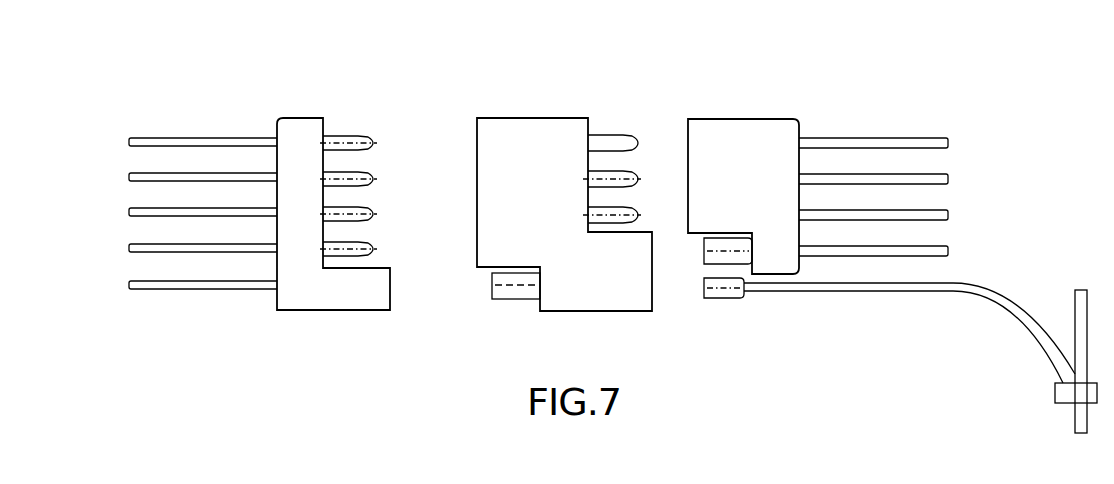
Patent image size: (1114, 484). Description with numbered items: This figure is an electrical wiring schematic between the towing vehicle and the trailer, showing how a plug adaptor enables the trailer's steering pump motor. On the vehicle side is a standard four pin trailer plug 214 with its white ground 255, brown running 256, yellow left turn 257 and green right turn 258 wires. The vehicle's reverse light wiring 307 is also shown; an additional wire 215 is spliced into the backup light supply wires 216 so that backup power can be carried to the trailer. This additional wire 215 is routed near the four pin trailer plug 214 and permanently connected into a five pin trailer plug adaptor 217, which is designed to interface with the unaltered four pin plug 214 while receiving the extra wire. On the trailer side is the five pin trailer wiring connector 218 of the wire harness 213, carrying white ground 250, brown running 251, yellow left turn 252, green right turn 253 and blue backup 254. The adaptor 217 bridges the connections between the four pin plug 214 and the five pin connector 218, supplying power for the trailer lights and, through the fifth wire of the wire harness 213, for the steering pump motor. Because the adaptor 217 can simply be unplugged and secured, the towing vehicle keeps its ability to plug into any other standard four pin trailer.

The wire harness 213 is at (310, 330).
The four pin trailer plug 214 is at (750, 112).
The additional wire 215 is at (877, 294).
The backup light supply wires 216 is at (1082, 327).
The five pin trailer plug adaptor 217 is at (523, 113).
The five pin trailer wiring connector 218 is at (283, 112).
The white ground 250 is at (169, 140).
The brown running 251 is at (169, 172).
The yellow left turn 252 is at (169, 207).
The green right turn 253 is at (169, 242).
The blue backup 254 is at (169, 279).
The white ground 255 is at (910, 140).
The brown running 256 is at (910, 173).
The yellow left turn 257 is at (910, 209).
The green right turn 258 is at (910, 244).
The reverse light wiring 307 is at (830, 113).